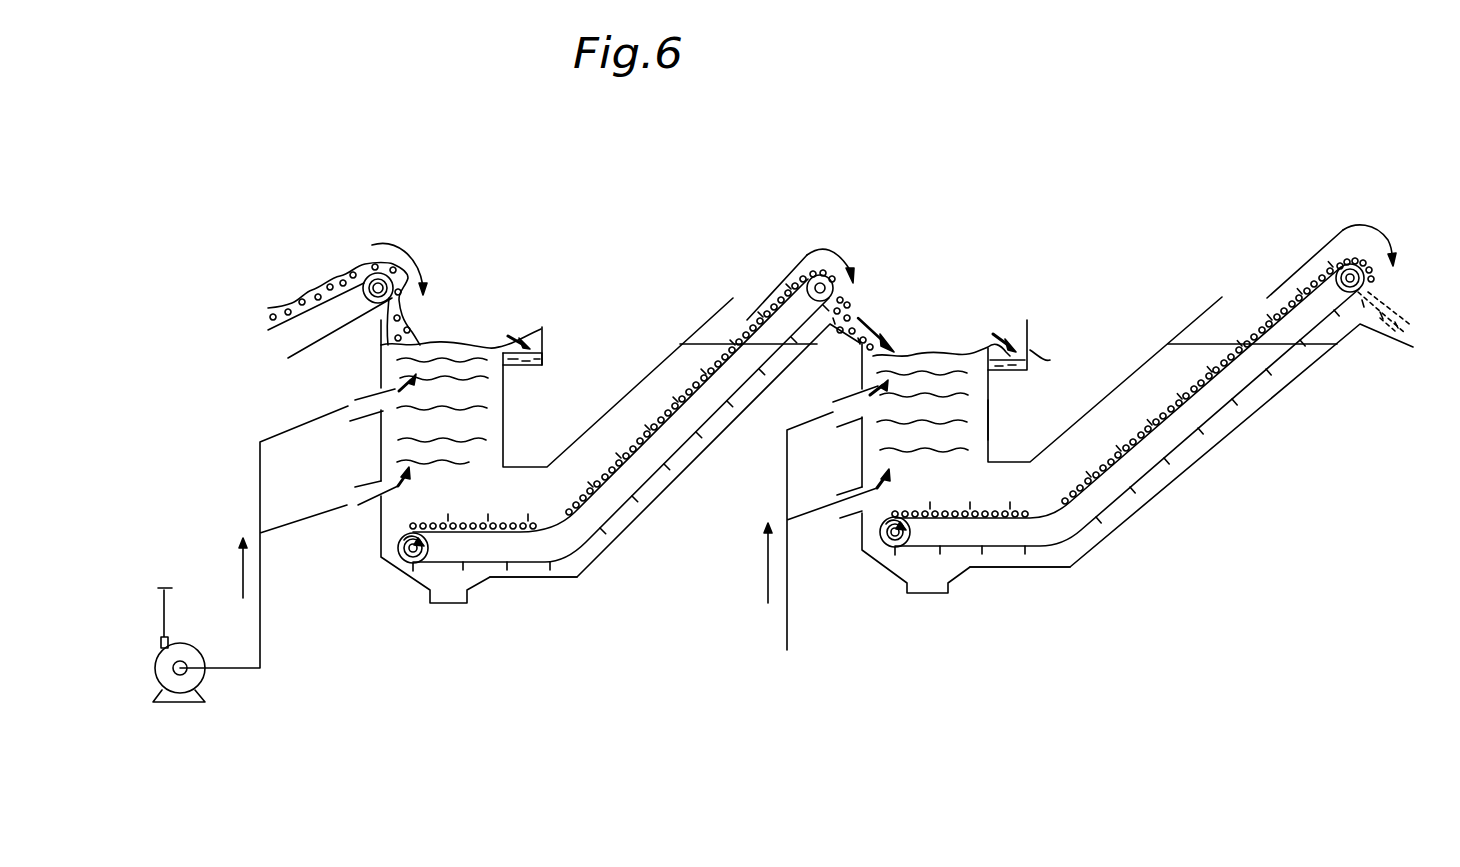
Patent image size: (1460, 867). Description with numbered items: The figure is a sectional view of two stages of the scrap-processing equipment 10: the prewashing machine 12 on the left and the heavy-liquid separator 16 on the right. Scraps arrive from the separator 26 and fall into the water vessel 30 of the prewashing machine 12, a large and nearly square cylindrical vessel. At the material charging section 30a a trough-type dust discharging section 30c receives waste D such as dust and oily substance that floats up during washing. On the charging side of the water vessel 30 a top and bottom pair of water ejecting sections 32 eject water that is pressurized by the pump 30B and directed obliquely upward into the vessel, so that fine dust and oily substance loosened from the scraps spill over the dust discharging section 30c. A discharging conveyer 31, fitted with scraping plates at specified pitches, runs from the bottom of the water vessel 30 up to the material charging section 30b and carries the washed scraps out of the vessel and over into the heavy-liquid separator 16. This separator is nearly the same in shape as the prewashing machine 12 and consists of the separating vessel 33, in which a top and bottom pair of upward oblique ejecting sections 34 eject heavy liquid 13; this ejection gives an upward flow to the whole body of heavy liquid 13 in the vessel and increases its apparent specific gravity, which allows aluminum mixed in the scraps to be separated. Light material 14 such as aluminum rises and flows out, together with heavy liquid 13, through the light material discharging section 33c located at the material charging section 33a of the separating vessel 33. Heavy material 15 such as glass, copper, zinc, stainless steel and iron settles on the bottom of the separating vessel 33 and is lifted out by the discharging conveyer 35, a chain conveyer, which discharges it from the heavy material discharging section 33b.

The equipment for processing scraps 10 is at (1239, 145).
The prewashing machine 12 is at (512, 248).
The heavy liquid 13 is at (765, 592).
The light material 14 is at (1027, 346).
The heavy material 15 is at (1378, 290).
The heavy-liquid separator 16 is at (1116, 248).
The separator 26 is at (292, 356).
The water vessel 30 is at (380, 452).
The material charging section 30a is at (462, 342).
The material charging section 30b is at (740, 341).
The dust discharging section 30c is at (547, 333).
The pump 30B is at (190, 644).
The discharging conveyer 31 is at (673, 477).
The water ejecting section 32 is at (367, 507).
The separating vessel 33 is at (990, 418).
The material charging section 33a is at (934, 355).
The heavy material discharging section 33b is at (1228, 336).
The light material discharging section 33c is at (1027, 347).
The ejecting section 34 is at (840, 517).
The discharging conveyer 35 is at (1160, 473).
The waste D is at (539, 324).